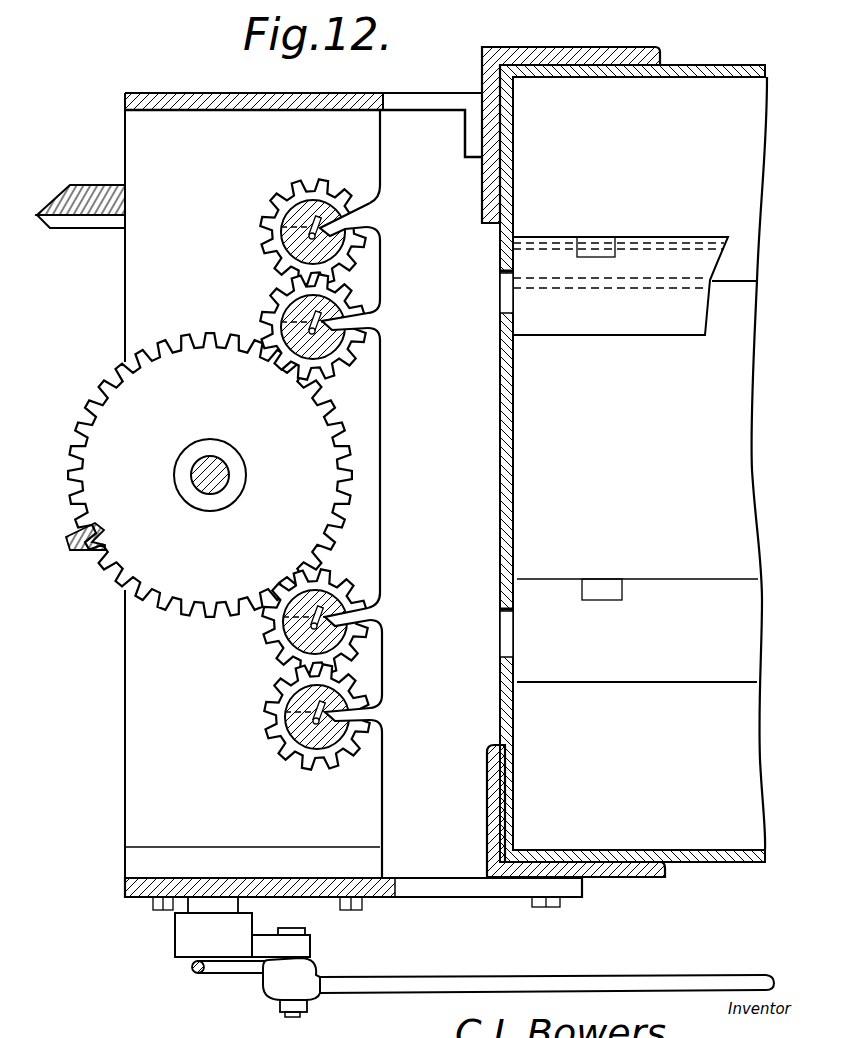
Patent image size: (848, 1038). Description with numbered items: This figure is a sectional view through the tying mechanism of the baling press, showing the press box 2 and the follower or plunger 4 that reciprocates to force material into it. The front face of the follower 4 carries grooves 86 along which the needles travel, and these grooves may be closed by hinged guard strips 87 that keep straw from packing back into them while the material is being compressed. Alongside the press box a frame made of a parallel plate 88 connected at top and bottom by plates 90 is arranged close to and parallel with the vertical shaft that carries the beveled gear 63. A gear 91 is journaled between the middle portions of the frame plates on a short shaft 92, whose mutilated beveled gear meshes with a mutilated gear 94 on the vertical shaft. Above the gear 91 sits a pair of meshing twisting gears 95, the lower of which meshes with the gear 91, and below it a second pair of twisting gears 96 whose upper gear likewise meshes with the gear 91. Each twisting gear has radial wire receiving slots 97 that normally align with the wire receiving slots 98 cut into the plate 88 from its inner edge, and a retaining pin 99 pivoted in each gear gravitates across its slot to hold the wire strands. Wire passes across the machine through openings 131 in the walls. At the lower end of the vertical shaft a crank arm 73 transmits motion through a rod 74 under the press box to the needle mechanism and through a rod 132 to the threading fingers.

The press box 2 is at (500, 430).
The follower or plunger 4 is at (700, 480).
The beveled gear 63 is at (78, 184).
The crank arm 73 is at (300, 943).
The rod 74 is at (600, 980).
The grooves 86 is at (742, 283).
The hinged guard strips 87 is at (675, 325).
The plate 88 is at (138, 758).
The plates 90 is at (216, 94).
The gear 91 is at (187, 362).
The short shaft 92 is at (192, 472).
The mutilated gear 94 is at (80, 540).
The twisting gears 95 is at (345, 297).
The twisting gears 96 is at (338, 577).
The wire receiving slots 97 is at (343, 358).
The wire receiving slots 98 is at (372, 312).
The retaining pin 99 is at (324, 212).
The openings 131 is at (507, 303).
The rod 132 is at (233, 966).